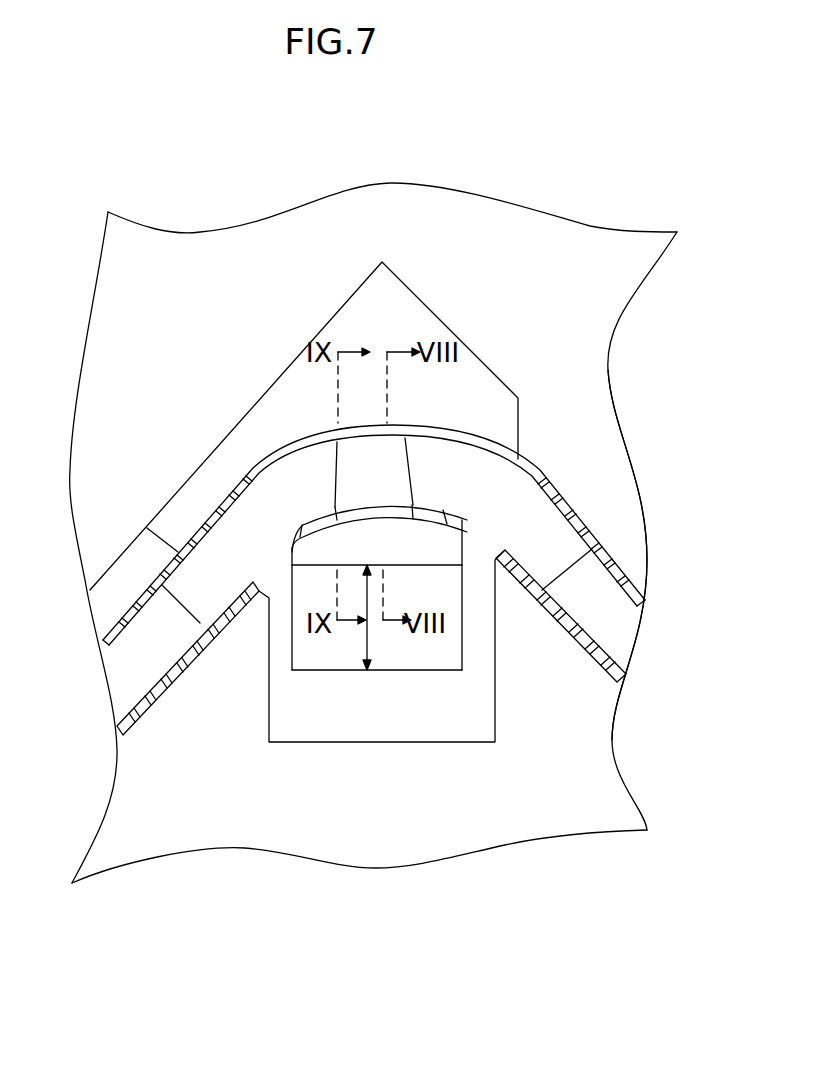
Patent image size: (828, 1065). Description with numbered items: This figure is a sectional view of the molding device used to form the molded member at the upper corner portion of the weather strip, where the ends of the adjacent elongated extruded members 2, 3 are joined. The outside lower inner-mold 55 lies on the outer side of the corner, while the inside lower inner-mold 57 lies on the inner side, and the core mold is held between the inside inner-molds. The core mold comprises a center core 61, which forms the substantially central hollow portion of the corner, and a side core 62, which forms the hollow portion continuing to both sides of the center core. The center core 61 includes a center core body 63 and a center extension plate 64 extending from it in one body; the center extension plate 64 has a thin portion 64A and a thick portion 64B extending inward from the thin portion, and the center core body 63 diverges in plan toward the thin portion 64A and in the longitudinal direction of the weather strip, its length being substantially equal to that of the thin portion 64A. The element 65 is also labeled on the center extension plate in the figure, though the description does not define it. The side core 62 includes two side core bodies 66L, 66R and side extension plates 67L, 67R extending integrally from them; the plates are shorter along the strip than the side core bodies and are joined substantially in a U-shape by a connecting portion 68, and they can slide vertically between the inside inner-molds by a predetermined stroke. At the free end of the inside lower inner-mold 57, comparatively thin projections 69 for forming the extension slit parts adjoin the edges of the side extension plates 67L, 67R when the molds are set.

The extruded member 2 is at (108, 638).
The extruded member 3 is at (638, 593).
The outside lower inner-mold 55 is at (523, 210).
The inside lower inner-mold 57 is at (533, 840).
The center core 61 is at (483, 710).
The side core 62 is at (428, 650).
The center core body 63 is at (383, 453).
The center extension plate 64 is at (388, 529).
The thin portion 64A is at (378, 505).
The thick portion 64B is at (445, 533).
The intermediate layer of band 65 is at (413, 532).
The side core body 66L is at (185, 607).
The side core body 66R is at (558, 575).
The side extension plate 67L is at (294, 645).
The side extension plate 67R is at (456, 640).
The connecting portion 68 is at (390, 664).
The projections 69 is at (506, 552).